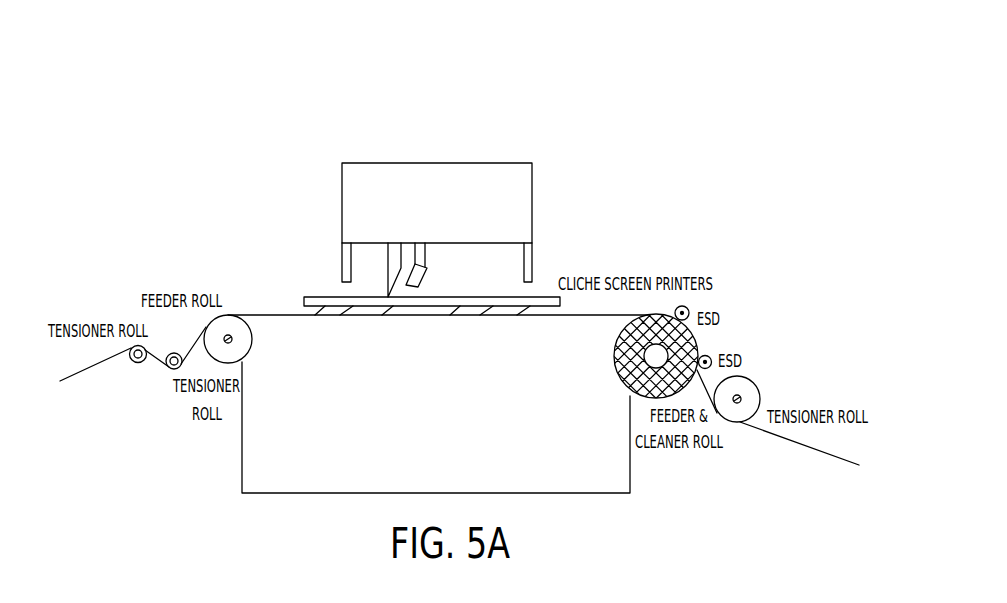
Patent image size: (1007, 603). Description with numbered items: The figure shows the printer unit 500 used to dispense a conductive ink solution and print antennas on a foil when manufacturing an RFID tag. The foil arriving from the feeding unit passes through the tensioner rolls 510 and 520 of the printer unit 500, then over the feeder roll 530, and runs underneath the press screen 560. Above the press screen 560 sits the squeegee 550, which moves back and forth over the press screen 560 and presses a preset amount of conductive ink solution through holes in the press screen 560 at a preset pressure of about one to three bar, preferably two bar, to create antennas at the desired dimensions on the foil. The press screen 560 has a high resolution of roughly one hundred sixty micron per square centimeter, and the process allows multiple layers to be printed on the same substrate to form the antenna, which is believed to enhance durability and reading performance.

The printer unit 500 is at (608, 103).
The tensioner roll 510 is at (131, 365).
The tensioner roll 520 is at (168, 371).
The feeder roll 530 is at (228, 315).
The squeegee 550 is at (421, 277).
The press screen 560 is at (543, 294).